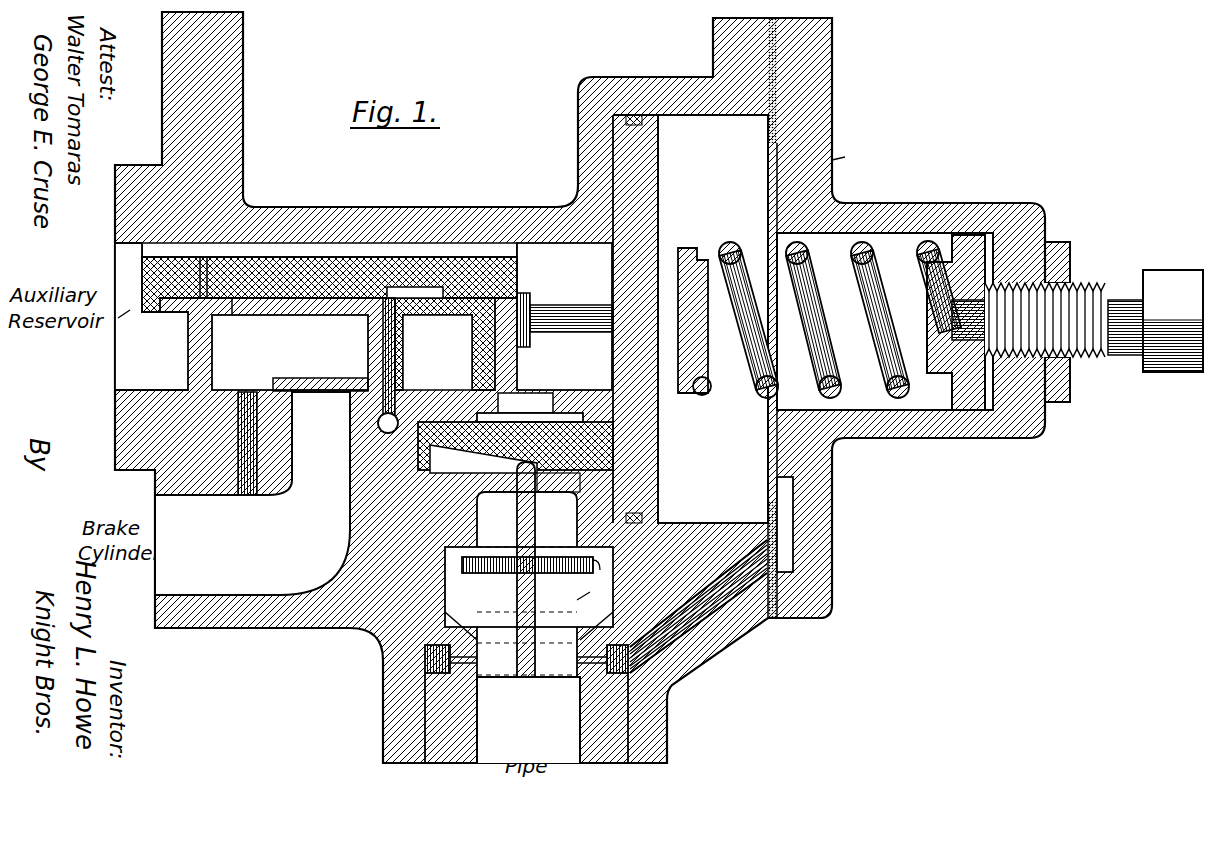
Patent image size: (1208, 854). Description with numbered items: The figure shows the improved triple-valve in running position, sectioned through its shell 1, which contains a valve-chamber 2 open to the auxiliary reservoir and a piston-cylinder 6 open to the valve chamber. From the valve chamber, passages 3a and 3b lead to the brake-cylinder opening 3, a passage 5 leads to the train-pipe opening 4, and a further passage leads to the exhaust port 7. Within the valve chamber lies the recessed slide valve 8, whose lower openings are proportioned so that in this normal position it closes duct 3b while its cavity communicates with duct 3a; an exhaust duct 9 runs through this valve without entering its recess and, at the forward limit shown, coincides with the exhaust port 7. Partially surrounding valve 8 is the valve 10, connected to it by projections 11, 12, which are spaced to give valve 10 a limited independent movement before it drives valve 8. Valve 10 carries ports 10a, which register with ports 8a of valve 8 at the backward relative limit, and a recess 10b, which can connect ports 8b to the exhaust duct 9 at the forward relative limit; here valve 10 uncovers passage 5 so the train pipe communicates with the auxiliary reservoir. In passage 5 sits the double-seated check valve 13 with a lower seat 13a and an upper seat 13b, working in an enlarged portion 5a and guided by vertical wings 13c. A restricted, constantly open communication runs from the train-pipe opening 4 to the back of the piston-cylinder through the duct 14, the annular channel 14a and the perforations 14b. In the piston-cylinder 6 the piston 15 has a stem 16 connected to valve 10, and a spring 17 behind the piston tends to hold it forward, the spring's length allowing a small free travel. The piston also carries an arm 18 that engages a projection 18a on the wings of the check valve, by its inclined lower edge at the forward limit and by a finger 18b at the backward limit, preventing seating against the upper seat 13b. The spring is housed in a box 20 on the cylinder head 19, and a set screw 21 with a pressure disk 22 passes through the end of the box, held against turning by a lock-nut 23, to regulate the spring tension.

The shell 1 is at (580, 387).
The valve-chamber 2 is at (151, 316).
The brake-cylinder opening 3 is at (252, 493).
The passage 3a is at (244, 457).
The duct 3b is at (308, 437).
The train-pipe opening 4 is at (528, 720).
The passage 5 is at (530, 438).
The enlarged portion 5a is at (460, 586).
The piston-cylinder 6 is at (713, 319).
The exhaust port 7 is at (388, 423).
The recessed slide valve 8 is at (290, 353).
The ports 8a is at (234, 300).
The ports 8b is at (445, 344).
The exhaust duct 9 is at (395, 356).
The valve 10 is at (332, 284).
The ports 10a is at (202, 300).
The recess 10b is at (415, 311).
The projection 11 is at (124, 326).
The rear projection 12 is at (512, 366).
The double-seated check valve 13 is at (527, 569).
The lower seat 13a is at (583, 603).
The upper seat 13b is at (594, 576).
The vertical wings 13c is at (527, 584).
The duct 14 is at (698, 606).
The annular channel 14a is at (432, 662).
The perforations 14b is at (526, 659).
The piston 15 is at (662, 230).
The stem 16 is at (565, 316).
The spring 17 is at (840, 319).
The arm 18 is at (595, 447).
The projection 18a is at (558, 482).
The finger 18b is at (483, 459).
The cylinder head 19 is at (851, 163).
The box 20 is at (880, 440).
The set screw 21 is at (1082, 262).
The pressure disk 22 is at (920, 308).
The lock-nut 23 is at (1072, 378).